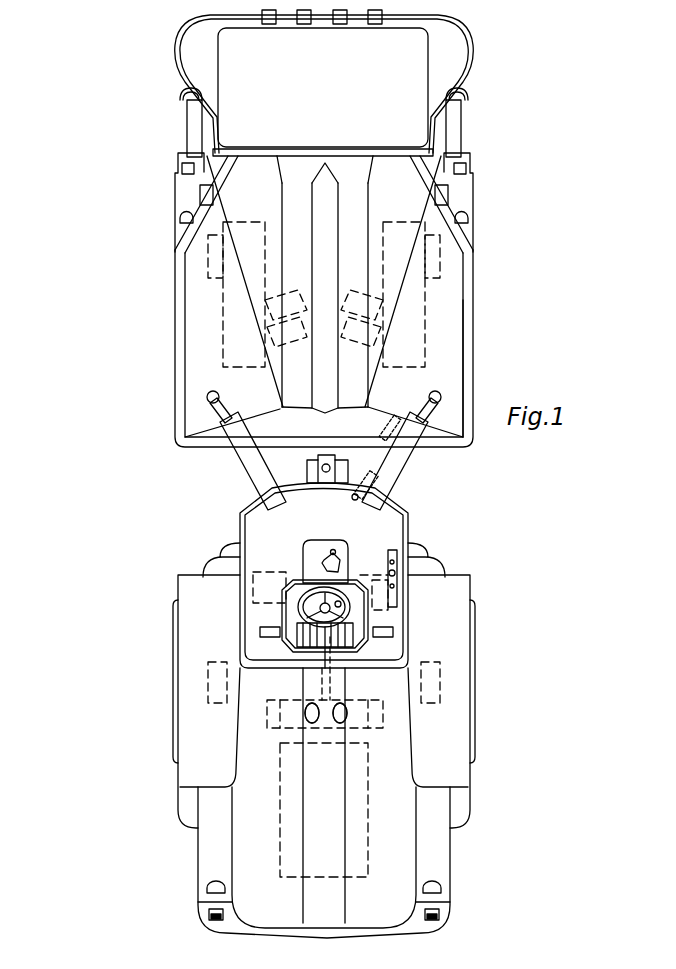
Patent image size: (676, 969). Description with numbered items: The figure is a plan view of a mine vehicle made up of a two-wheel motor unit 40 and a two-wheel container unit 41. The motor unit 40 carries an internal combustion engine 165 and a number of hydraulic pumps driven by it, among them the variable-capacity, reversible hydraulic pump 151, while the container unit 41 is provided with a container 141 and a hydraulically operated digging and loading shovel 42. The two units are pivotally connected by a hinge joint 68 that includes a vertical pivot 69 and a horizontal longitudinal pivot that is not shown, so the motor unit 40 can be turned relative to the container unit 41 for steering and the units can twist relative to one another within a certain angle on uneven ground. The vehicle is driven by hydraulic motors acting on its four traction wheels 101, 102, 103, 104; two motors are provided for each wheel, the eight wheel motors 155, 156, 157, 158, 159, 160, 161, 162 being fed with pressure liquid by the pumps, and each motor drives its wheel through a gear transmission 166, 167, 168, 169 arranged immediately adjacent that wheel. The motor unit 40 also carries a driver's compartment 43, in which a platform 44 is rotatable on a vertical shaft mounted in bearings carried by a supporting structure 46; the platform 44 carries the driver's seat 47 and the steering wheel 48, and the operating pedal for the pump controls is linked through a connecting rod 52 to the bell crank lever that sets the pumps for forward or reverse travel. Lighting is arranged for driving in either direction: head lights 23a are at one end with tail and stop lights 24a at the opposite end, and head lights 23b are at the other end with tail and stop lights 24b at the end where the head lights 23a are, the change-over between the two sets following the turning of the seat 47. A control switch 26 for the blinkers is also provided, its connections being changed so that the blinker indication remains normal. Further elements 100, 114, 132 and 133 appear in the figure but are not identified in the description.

The head lights 23a is at (224, 890).
The head lights 23b is at (181, 217).
The tail and stop lights 24a is at (182, 167).
The tail and stop lights 24b is at (208, 917).
The control switch for the blinkers 26 is at (352, 604).
The two-wheel motor unit 40 is at (250, 764).
The two-wheel container unit 41 is at (177, 421).
The digging and loading shovel 42 is at (198, 65).
The driver's compartment 43 is at (273, 663).
The platform 44 is at (290, 608).
The supporting structure 46 is at (362, 565).
The driver's seat 47 is at (312, 567).
The steering wheel 48 is at (338, 617).
The connecting rod 52 is at (262, 590).
The hinge joint 68 is at (307, 458).
The vertical pivot 69 is at (329, 458).
The hydraulic cylinder 100 is at (366, 478).
The traction wheel 101 is at (468, 180).
The traction wheel 102 is at (177, 242).
The traction wheel 103 is at (472, 663).
The traction wheel 104 is at (176, 667).
The control handle 114 is at (386, 418).
The right lift arm 132 is at (398, 468).
The left lift arm 133 is at (260, 478).
The container 141 is at (200, 318).
The hydraulic pump 151 is at (373, 587).
The wheel motor 155 is at (383, 727).
The wheel motor 156 is at (267, 728).
The wheel motor 157 is at (468, 725).
The wheel motor 158 is at (208, 728).
The wheel motor 159 is at (465, 335).
The wheel motor 160 is at (212, 365).
The wheel motor 161 is at (467, 300).
The wheel motor 162 is at (222, 330).
The internal combustion engine 165 is at (280, 808).
The gear transmission 166 is at (227, 685).
The gear transmission 167 is at (440, 687).
The gear transmission 168 is at (193, 273).
The gear transmission 169 is at (472, 252).